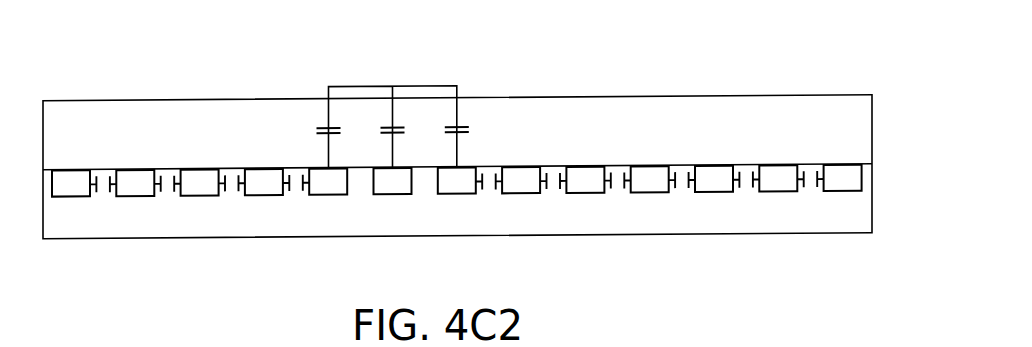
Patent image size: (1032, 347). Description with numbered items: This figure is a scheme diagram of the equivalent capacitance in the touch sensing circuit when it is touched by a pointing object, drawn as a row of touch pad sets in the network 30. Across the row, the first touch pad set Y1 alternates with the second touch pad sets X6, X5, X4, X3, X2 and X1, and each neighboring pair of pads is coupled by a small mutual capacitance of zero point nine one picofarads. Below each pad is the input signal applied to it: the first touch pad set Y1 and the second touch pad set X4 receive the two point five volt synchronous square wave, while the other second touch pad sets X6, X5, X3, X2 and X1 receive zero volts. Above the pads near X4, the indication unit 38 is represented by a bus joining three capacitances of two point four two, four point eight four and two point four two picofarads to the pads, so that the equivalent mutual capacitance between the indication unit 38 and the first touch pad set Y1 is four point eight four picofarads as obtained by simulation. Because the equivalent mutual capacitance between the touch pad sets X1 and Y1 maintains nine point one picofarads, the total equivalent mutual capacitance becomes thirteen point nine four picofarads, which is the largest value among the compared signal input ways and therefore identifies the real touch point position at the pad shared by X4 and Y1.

The touch sensor capacitance network 30 is at (457, 136).
The indication unit 38 is at (396, 89).
The touch pad set X1 is at (778, 179).
The touch pad set X2 is at (650, 180).
The X electrode X3 is at (521, 181).
The second touch pad set X4 is at (393, 182).
The X electrode X5 is at (264, 183).
The X electrode X6 is at (135, 184).
The first touch pad set Y1 is at (457, 182).